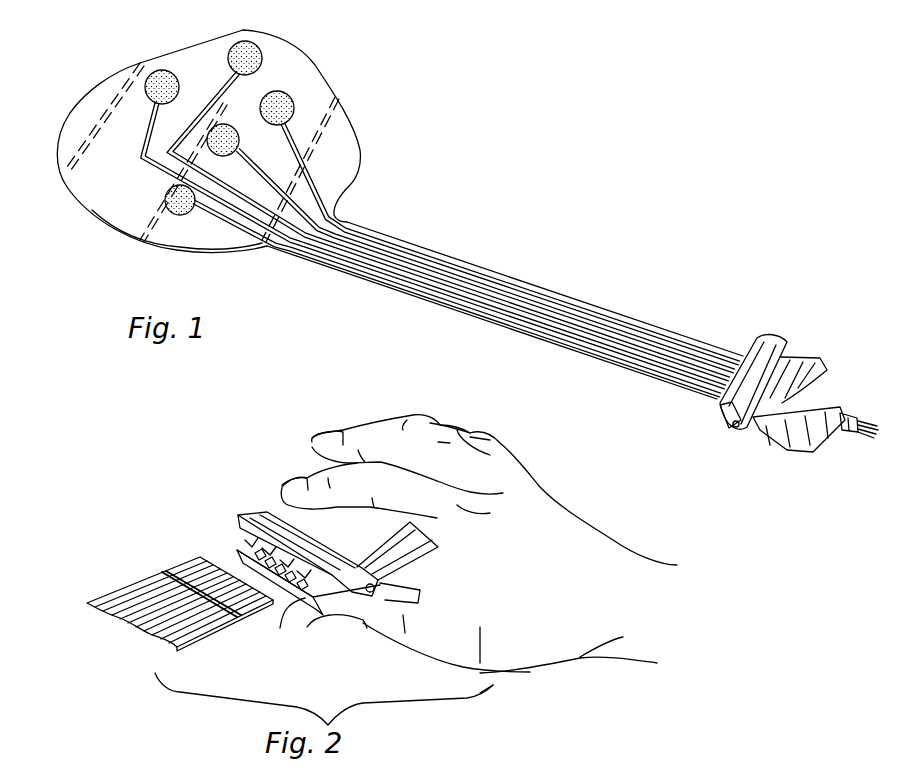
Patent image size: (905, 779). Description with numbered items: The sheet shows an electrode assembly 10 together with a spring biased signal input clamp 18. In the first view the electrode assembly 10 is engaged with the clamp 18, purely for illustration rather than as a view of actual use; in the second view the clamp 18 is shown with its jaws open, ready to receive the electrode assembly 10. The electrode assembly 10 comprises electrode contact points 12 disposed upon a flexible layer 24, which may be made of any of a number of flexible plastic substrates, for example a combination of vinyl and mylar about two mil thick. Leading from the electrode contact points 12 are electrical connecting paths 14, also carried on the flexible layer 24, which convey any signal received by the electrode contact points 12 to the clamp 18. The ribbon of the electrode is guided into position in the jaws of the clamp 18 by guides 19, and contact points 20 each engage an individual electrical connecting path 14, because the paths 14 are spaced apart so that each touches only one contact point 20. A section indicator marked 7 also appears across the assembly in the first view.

In FIG. 1, the electrode assembly 10 is at (467, 229).
In FIG. 2, the electrode assembly 10 is at (164, 589).
In FIG. 1, the electrode contact points 12 is at (295, 106).
In FIG. 1, the electrical connecting paths 14 is at (313, 183).
In FIG. 2, the electrical connecting paths 14 is at (213, 557).
In FIG. 1, the spring biased signal input clamp 18 is at (767, 337).
In FIG. 2, the spring biased signal input clamp 18 is at (303, 569).
In FIG. 2, the guides 19 is at (237, 550).
In FIG. 2, the contact points 20 is at (292, 593).
In FIG. 1, the flexible layer 24 is at (198, 44).
In FIG. 1, the section line 7- 7 is at (325, 22).